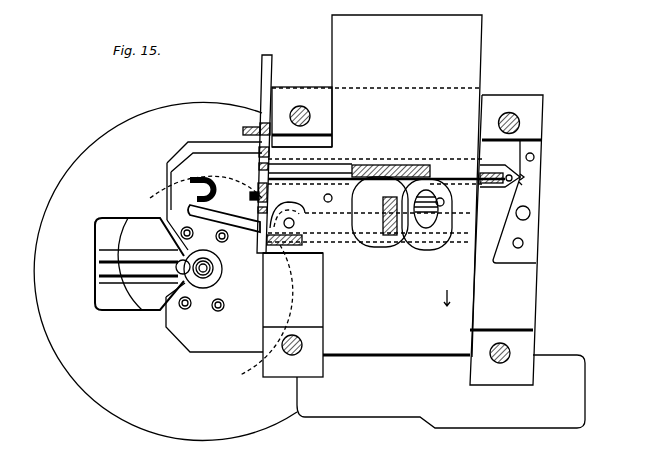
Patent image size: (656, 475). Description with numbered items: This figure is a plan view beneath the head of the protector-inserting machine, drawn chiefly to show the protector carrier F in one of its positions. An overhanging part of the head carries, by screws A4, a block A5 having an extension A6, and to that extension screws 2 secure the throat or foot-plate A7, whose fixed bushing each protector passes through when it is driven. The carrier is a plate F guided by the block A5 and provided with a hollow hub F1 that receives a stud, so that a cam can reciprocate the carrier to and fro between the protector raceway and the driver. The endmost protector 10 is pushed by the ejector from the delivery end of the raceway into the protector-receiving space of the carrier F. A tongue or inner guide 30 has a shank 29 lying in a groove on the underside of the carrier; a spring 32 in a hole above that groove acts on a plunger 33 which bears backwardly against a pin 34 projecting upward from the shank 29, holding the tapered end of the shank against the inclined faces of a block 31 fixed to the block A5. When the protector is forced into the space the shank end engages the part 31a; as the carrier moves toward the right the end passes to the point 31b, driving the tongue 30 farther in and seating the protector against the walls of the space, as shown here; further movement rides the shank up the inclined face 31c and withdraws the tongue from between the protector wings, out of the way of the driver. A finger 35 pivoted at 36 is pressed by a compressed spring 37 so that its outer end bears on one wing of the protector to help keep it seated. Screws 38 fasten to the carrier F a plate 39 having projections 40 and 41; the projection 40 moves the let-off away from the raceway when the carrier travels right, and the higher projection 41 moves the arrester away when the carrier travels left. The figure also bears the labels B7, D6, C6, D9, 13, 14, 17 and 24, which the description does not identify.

The circular body B7 is at (72, 160).
The throat or foot-plate A7 is at (176, 337).
The extension A6 is at (203, 142).
The protector carrier F is at (477, 54).
The block A5 is at (293, 90).
The screws A4 is at (310, 117).
The screws 38 is at (319, 148).
The plate 39 is at (266, 56).
The projection 40 is at (250, 128).
The projection 41 is at (253, 192).
The tongue or inner guide 30 is at (186, 190).
The endmost protector 10 is at (215, 196).
The pivot 36 is at (287, 227).
The plunger 33 is at (453, 170).
The spring 32 is at (380, 166).
The compressed spring 37 is at (380, 212).
The hollow hub F1 is at (422, 247).
The shank 29 is at (500, 167).
The pin 34 is at (521, 178).
The block 31 is at (527, 199).
The part of block 31a is at (532, 153).
The point of block 31b is at (521, 183).
The inclined face 31c is at (530, 215).
The hub D6 is at (220, 259).
The shaft end C6 is at (193, 271).
The ring 17 is at (178, 262).
The clamp lever D9 is at (113, 253).
The upper bar 13 is at (99, 275).
The lower bar 14 is at (179, 268).
The finger 35 is at (193, 235).
The screws 2 is at (216, 238).
The screw 24 is at (191, 304).